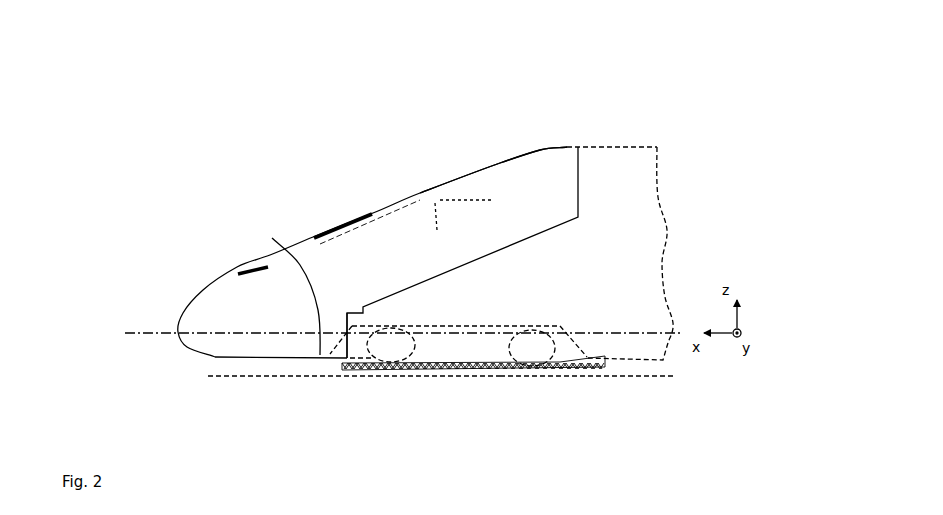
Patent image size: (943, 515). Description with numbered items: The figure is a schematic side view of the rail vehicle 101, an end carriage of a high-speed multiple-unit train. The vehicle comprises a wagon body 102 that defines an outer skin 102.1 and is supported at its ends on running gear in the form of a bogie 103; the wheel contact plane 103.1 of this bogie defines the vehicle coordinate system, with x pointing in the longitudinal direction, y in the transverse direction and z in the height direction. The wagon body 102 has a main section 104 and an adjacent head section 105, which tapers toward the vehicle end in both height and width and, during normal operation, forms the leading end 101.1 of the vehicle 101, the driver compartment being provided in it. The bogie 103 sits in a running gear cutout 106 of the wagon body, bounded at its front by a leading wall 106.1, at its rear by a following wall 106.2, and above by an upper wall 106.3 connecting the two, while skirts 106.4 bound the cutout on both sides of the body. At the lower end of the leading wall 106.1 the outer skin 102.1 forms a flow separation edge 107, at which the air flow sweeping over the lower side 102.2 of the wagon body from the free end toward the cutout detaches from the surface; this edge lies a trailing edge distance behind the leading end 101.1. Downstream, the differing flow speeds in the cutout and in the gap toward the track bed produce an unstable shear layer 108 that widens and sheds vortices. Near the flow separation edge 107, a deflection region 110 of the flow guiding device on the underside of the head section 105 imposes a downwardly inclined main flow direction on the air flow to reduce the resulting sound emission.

The rail vehicle 101 is at (690, 41).
The leading end 101.1 is at (174, 332).
The wagon body 102 is at (595, 144).
The outer skin 102.1 is at (540, 146).
The lower side 102.2 is at (440, 381).
The bogie 103 is at (535, 377).
The wheel contact plane 103.1 is at (643, 378).
The main section 104 is at (651, 146).
The head section 105 is at (500, 162).
The running gear cutout 106 is at (478, 350).
The leading wall 106.1 is at (338, 335).
The following wall 106.2 is at (582, 347).
The upper wall 106.3 is at (438, 322).
The skirts 106.4 is at (555, 343).
The flow separation edge 107 is at (272, 238).
The shear layer 108 is at (344, 364).
The deflection region 110 is at (320, 364).